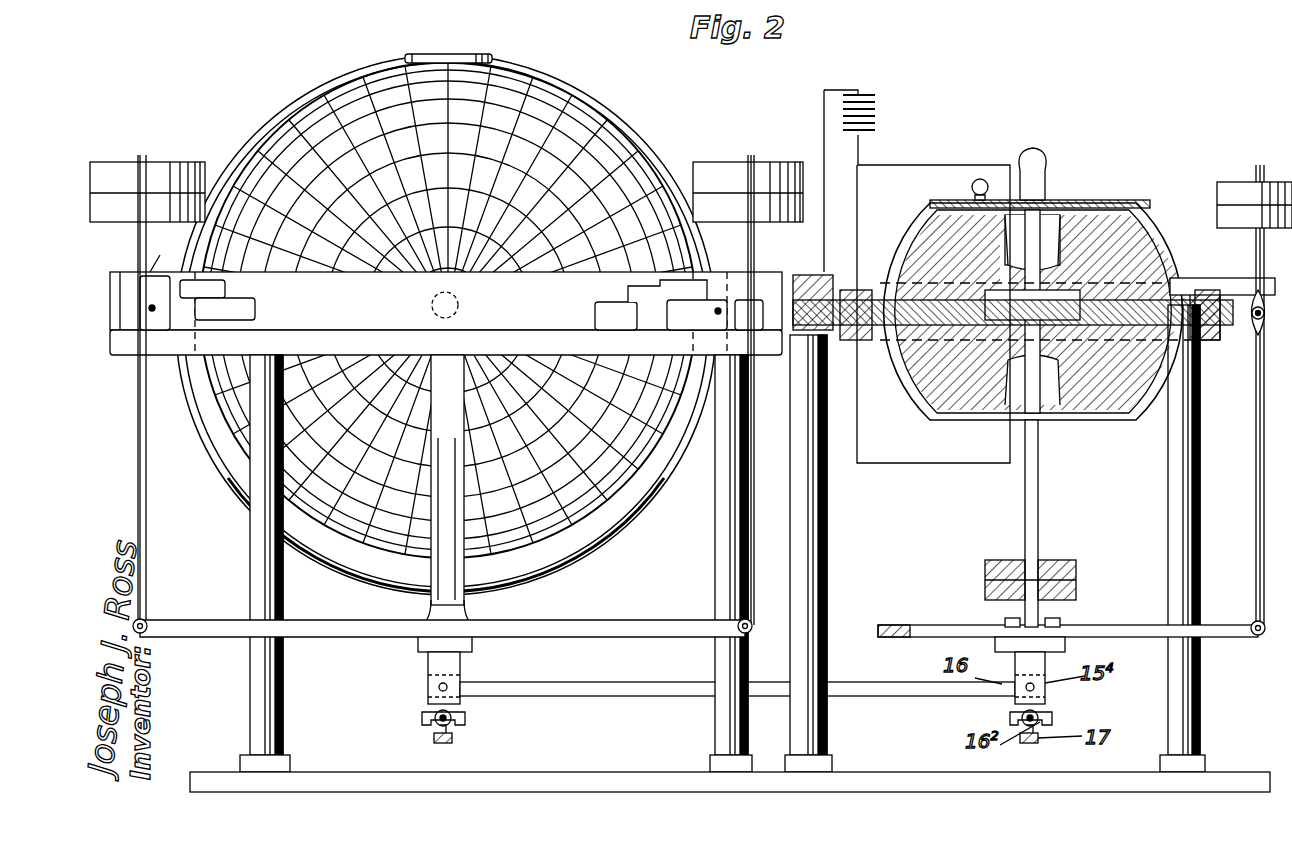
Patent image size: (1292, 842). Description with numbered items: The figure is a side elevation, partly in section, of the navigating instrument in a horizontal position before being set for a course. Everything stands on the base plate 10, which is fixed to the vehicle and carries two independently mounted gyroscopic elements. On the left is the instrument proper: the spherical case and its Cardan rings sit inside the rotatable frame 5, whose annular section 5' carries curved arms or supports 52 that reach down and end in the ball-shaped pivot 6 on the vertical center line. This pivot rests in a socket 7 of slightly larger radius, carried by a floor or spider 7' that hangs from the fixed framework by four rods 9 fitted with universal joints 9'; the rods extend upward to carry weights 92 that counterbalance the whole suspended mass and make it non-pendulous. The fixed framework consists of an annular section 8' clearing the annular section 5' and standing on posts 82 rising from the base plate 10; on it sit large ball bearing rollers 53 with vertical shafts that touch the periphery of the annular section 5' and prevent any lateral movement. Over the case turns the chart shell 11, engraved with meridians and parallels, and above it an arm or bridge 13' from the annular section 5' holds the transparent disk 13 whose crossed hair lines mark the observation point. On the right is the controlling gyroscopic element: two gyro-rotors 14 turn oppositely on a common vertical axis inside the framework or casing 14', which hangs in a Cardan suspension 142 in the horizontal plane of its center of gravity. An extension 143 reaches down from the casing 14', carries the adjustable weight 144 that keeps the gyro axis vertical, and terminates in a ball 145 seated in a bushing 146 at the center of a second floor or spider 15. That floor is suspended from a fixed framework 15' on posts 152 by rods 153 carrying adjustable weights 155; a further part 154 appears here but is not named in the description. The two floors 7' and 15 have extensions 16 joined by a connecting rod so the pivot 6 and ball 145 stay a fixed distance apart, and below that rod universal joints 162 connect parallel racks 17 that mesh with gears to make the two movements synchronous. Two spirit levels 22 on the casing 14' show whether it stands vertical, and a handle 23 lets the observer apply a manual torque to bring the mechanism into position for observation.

The rotatable frame 5 is at (447, 480).
The annular section 5' is at (446, 301).
The arms or supports 52 is at (627, 540).
The ball bearing rollers 53 is at (255, 308).
The pivot 6 is at (452, 612).
The socket 7 is at (429, 624).
The floor or spider 7' is at (584, 606).
The annular section 8' is at (446, 313).
The posts 82 is at (280, 700).
The rods 9 is at (460, 390).
The universal joints 9' is at (441, 440).
The weights 92 is at (115, 162).
The base plate 10 is at (575, 770).
The chart shell 11 is at (598, 108).
The transparent disk 13 is at (450, 34).
The arm or bridge 13' is at (446, 325).
The gyro-rotors 14 is at (1035, 309).
The framework or casing 14' is at (1044, 183).
The Cardan suspension 142 is at (1212, 340).
The extension 143 is at (1038, 500).
The weight 144 is at (1055, 560).
The ball 145 is at (1005, 622).
The bushing 146 is at (1060, 622).
The floor or spider 15 is at (1025, 468).
The fixed framework 15' is at (1034, 275).
The posts 152 is at (830, 592).
The rods 153 is at (1238, 400).
The pendant 154 is at (428, 685).
The adjustable weights 155 is at (1240, 182).
The extensions 16 is at (462, 690).
The universal joints 162 is at (438, 722).
The racks 17 is at (452, 738).
The spirit levels 22 is at (983, 178).
The handle 23 is at (1045, 160).